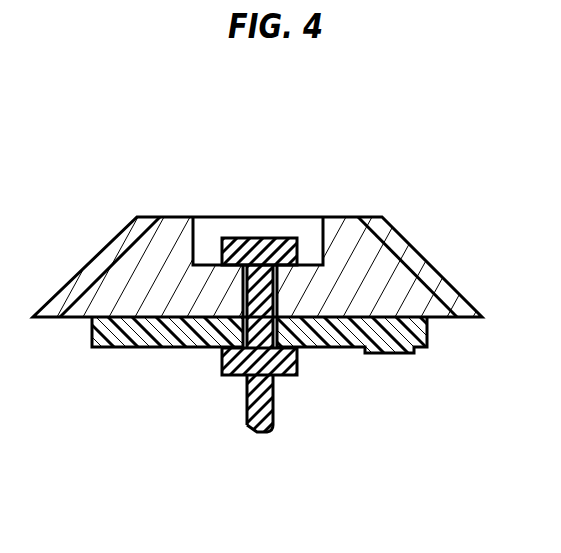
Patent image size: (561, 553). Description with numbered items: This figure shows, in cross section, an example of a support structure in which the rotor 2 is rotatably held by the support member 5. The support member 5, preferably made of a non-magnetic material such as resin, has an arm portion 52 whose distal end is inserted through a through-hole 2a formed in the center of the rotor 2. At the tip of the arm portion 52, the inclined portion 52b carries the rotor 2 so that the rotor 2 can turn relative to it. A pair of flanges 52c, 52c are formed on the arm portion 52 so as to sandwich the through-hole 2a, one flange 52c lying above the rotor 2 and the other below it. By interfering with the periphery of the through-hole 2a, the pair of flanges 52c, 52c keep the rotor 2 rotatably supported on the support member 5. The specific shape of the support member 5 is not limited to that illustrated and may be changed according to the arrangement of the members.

The rotor 2 is at (112, 220).
The through-hole 2a is at (243, 285).
The support member 5 is at (244, 329).
The arm portion 52 is at (255, 409).
The inclined portion 52b is at (250, 418).
The flange 52c is at (277, 248).